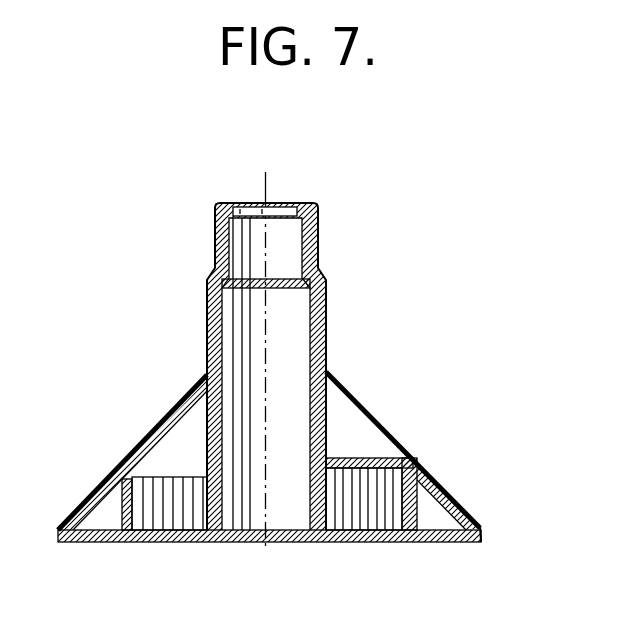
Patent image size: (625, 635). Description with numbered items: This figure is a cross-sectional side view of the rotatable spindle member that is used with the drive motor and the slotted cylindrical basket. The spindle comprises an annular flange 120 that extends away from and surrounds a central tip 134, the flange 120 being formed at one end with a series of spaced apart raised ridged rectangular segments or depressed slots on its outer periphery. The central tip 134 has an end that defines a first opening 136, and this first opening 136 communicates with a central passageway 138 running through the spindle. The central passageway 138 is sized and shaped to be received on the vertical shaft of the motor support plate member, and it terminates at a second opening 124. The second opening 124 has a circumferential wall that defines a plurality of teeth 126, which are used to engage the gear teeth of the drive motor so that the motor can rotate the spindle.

The annular flange 120 is at (428, 466).
The second opening 124 is at (403, 541).
The teeth 126 is at (152, 518).
The central tip 134 is at (322, 270).
The first opening 136 is at (268, 203).
The central passageway 138 is at (277, 368).